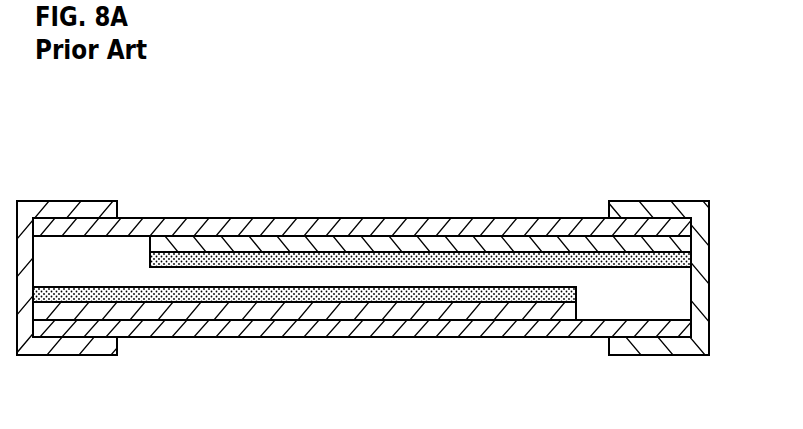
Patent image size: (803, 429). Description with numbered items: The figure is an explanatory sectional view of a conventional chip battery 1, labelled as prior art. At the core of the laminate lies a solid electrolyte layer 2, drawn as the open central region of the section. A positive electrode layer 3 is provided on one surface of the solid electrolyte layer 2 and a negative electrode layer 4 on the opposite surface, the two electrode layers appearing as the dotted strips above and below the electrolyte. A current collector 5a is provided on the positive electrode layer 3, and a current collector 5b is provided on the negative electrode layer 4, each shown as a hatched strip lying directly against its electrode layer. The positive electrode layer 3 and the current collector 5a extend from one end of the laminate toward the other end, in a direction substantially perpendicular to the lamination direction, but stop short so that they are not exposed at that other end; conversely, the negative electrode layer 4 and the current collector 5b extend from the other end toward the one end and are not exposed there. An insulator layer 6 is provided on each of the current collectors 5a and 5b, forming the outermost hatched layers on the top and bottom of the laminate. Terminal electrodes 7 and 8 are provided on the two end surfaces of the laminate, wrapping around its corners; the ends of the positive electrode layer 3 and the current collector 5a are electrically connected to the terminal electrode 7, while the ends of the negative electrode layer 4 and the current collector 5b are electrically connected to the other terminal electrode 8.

The chip battery 1 is at (142, 116).
The solid electrolyte layer 2 is at (295, 280).
The positive electrode layer 3 is at (367, 262).
The negative electrode layer 4 is at (363, 292).
The current collector 5a is at (440, 243).
The current collector 5b is at (443, 312).
The insulator layer 6 is at (544, 228).
The terminal electrode 7 is at (652, 207).
The terminal electrode 8 is at (53, 207).